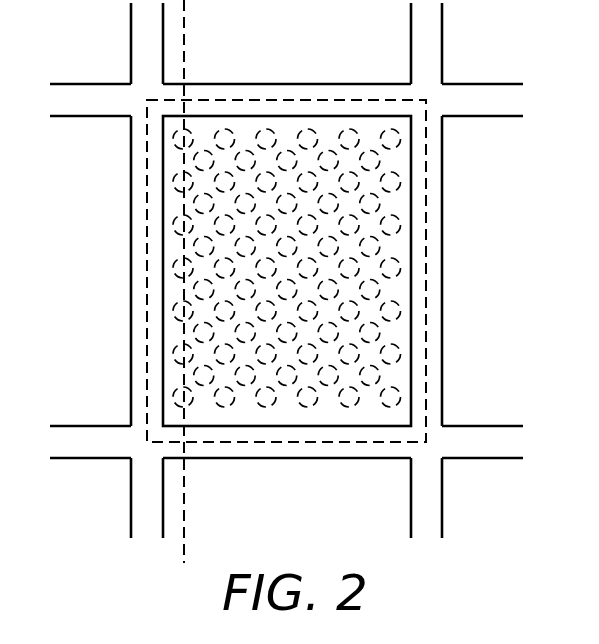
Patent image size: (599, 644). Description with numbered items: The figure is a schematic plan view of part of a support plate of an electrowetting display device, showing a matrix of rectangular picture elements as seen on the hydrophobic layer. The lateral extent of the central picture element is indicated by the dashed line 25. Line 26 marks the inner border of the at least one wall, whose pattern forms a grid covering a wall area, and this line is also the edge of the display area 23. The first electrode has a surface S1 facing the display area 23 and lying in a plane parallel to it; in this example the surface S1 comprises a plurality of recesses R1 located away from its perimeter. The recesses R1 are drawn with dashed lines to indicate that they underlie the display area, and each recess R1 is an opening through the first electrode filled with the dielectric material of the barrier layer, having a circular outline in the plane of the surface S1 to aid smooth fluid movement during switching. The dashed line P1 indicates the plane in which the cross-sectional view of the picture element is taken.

The display area 23 is at (397, 162).
The dashed line indicating lateral extent of picture element 25 is at (427, 258).
The edge of the display area 26 is at (412, 343).
The plane P1 is at (184, 14).
The surface of the first electrode S1 is at (239, 222).
The recesses R1 is at (239, 268).